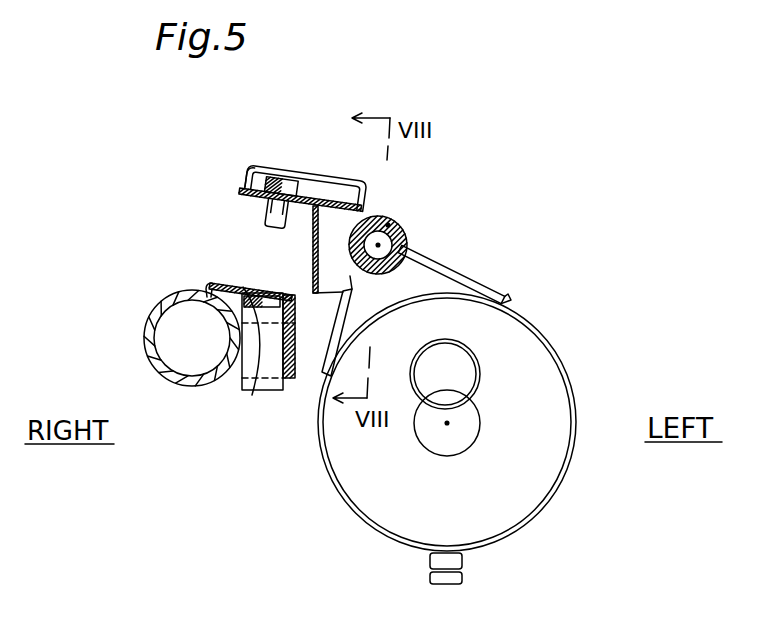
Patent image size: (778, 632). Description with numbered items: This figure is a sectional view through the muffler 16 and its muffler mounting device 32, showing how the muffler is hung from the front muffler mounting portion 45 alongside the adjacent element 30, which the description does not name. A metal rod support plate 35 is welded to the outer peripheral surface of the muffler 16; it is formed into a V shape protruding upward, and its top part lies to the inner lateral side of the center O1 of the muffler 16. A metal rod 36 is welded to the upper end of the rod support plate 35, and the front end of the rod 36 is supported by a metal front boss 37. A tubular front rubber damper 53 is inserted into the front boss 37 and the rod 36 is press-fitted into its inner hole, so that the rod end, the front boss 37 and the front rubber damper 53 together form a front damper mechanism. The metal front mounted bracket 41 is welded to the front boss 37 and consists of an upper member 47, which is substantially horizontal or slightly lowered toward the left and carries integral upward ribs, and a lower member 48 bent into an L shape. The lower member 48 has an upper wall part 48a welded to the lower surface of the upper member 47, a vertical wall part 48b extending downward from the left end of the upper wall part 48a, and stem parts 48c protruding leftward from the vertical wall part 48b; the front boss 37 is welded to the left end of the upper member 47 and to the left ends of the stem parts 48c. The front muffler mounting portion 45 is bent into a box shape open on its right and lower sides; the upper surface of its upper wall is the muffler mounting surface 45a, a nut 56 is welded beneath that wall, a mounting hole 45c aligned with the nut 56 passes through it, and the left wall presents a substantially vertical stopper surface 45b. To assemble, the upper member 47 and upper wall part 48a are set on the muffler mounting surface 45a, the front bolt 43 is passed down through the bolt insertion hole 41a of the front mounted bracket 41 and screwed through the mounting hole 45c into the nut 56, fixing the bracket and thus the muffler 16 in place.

The muffler 16 is at (557, 492).
The center of the muffler O1 is at (447, 423).
The photosensitive drum shaft / tube 30 is at (147, 352).
The muffler mounting device 32 is at (342, 233).
The rod support plate 35 is at (475, 287).
The rod 36 is at (420, 258).
The front boss 37 is at (405, 226).
The front mounted bracket 41 is at (305, 188).
The bolt insertion hole 41a is at (250, 177).
The front bolt 43 is at (281, 186).
The front muffler mounting portion 45 is at (211, 358).
The muffler mounting surface 45a is at (218, 280).
The stopper surface 45b is at (295, 362).
The mounting hole 45c is at (231, 283).
The upper member 47 is at (277, 213).
The lower member 48 is at (328, 300).
The upper wall part 48a is at (300, 199).
The vertical wall part 48b is at (313, 253).
The stem parts 48c is at (350, 276).
The front rubber damper 53 is at (390, 224).
The nut 56 is at (252, 393).